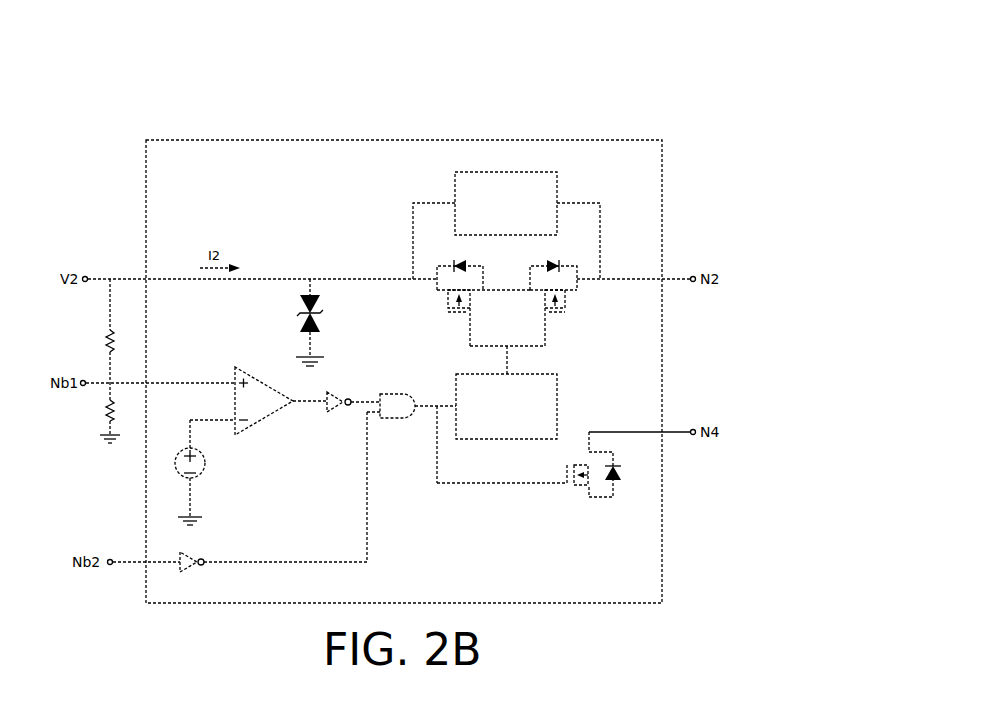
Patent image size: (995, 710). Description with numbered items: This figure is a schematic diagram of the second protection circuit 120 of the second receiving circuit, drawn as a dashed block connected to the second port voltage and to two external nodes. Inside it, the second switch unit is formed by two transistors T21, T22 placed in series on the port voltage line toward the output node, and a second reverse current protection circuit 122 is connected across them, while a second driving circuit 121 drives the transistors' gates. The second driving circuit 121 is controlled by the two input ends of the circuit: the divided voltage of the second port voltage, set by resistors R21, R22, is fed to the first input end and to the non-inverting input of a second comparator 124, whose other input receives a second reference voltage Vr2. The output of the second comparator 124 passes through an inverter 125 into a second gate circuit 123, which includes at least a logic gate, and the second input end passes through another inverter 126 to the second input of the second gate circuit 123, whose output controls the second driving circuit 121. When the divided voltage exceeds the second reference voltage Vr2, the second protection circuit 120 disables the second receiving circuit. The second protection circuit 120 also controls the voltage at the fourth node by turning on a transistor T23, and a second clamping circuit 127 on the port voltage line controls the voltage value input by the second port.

The second protection circuit 120 is at (650, 77).
The second driving circuit 121 is at (519, 415).
The second reverse current protection circuit 122 is at (518, 213).
The second gate circuit 123 is at (395, 419).
The second comparator 124 is at (272, 418).
The inverter 125 is at (338, 409).
The inverter 126 is at (192, 553).
The second clamping circuit 127 is at (321, 312).
The transistor T21 is at (450, 303).
The transistor T22 is at (563, 303).
The transistor T23 is at (586, 468).
The resistor R21 is at (94, 315).
The resistor R22 is at (94, 410).
The second reference voltage Vr2 is at (205, 466).